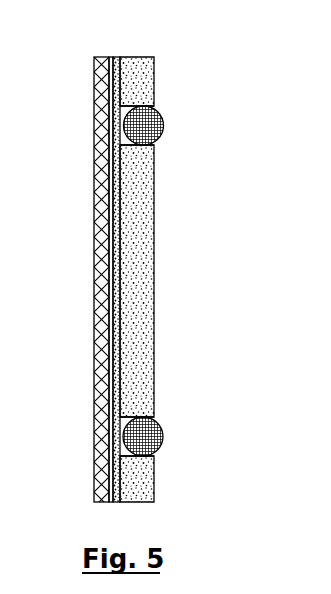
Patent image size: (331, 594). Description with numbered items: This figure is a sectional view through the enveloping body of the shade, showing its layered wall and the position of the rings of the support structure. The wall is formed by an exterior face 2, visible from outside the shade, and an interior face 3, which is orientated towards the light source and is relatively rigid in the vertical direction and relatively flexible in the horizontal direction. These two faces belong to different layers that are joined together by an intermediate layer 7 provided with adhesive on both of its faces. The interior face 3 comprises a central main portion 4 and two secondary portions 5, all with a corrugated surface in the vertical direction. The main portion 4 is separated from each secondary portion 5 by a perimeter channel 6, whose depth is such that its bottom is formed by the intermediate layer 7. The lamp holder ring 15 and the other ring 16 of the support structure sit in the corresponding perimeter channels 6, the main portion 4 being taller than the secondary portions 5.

The exterior face 2 is at (95, 223).
The interior face 3 is at (155, 238).
The main portion 4 is at (145, 283).
The secondary portions 5 is at (148, 68).
The perimeter channel 6 is at (125, 106).
The intermediate layer 7 is at (117, 323).
The lamp holder ring 15 is at (150, 122).
The ring 16 is at (152, 435).